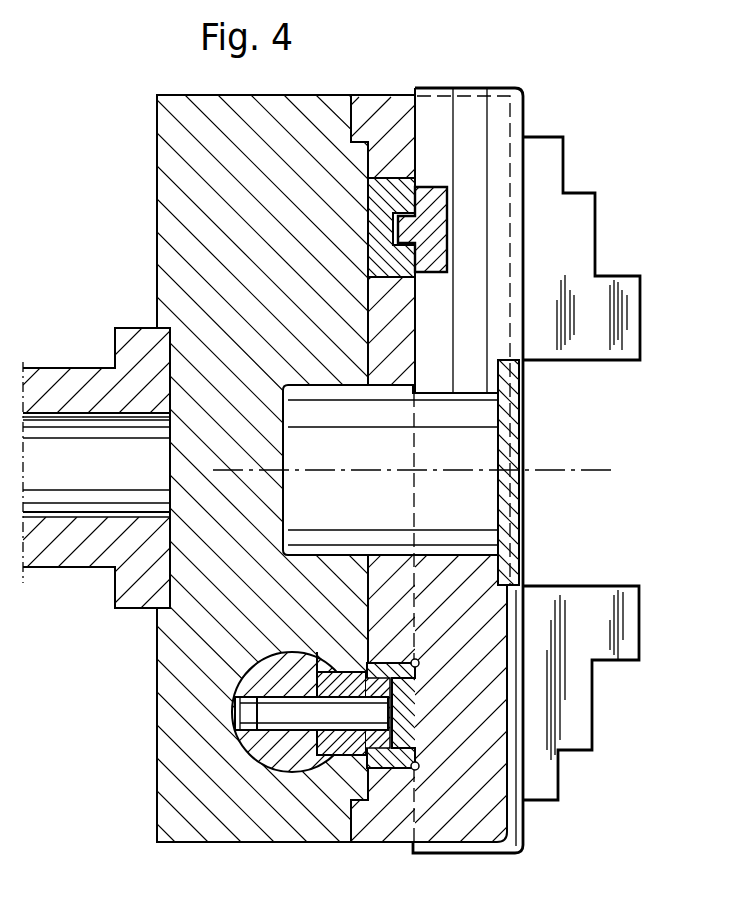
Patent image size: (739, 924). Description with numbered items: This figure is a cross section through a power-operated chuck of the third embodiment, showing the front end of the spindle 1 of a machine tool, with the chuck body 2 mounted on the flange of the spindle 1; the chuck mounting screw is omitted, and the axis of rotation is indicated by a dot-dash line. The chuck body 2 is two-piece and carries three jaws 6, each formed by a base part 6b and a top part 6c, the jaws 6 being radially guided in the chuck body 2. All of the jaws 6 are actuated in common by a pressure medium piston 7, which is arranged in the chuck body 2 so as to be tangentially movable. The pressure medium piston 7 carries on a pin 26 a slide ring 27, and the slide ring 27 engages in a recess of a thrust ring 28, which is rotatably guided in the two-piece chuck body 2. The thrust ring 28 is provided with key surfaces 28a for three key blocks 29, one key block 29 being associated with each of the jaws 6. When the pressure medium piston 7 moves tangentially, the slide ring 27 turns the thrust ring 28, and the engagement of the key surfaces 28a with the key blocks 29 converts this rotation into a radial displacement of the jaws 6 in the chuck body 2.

The spindle 1 is at (72, 386).
The chuck body 2 is at (173, 108).
The jaws 6 is at (500, 113).
The base part 6b is at (475, 337).
The top part 6c is at (582, 229).
The pressure medium piston 7 is at (284, 758).
The pin 26 is at (330, 722).
The slide ring 27 is at (358, 750).
The thrust ring 28 is at (388, 189).
The key surfaces 28a is at (405, 243).
The key blocks 29 is at (432, 255).